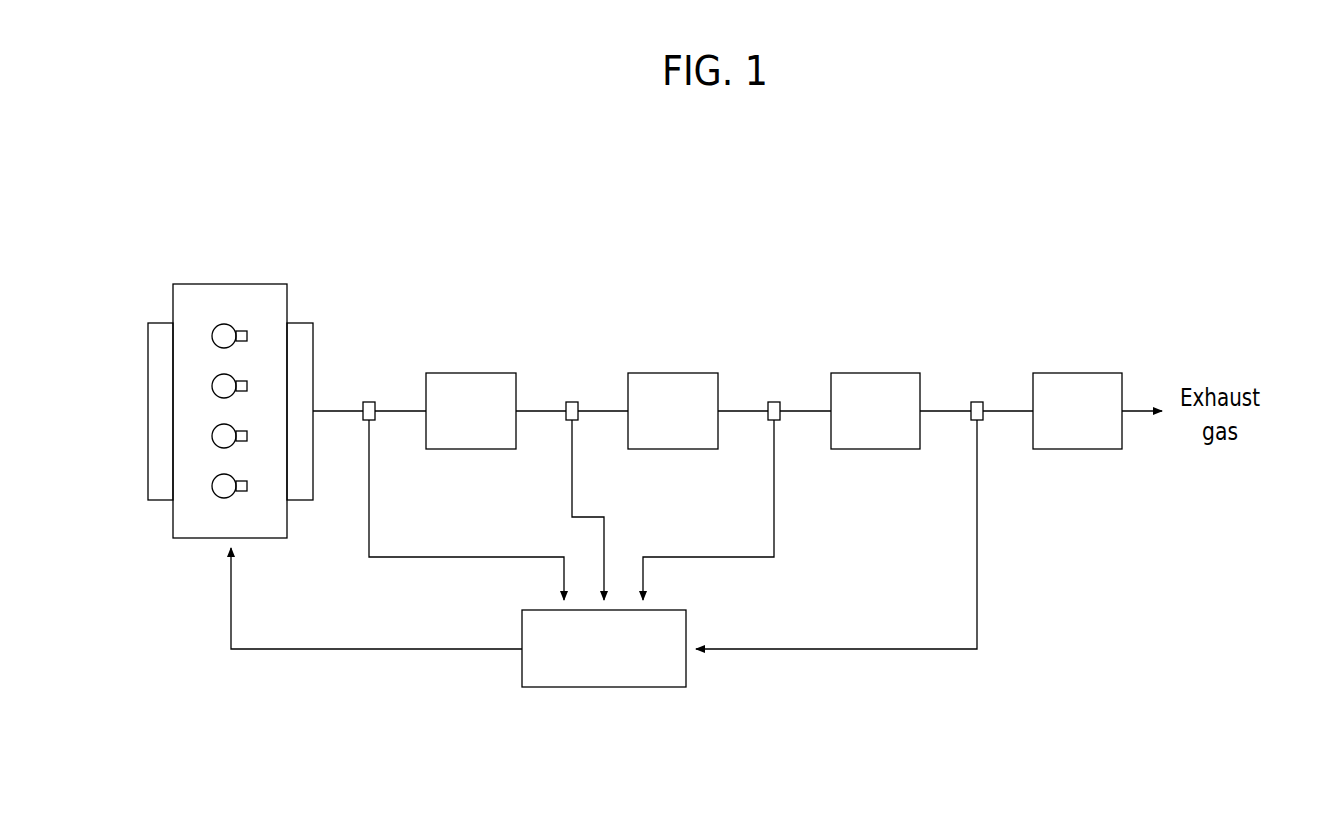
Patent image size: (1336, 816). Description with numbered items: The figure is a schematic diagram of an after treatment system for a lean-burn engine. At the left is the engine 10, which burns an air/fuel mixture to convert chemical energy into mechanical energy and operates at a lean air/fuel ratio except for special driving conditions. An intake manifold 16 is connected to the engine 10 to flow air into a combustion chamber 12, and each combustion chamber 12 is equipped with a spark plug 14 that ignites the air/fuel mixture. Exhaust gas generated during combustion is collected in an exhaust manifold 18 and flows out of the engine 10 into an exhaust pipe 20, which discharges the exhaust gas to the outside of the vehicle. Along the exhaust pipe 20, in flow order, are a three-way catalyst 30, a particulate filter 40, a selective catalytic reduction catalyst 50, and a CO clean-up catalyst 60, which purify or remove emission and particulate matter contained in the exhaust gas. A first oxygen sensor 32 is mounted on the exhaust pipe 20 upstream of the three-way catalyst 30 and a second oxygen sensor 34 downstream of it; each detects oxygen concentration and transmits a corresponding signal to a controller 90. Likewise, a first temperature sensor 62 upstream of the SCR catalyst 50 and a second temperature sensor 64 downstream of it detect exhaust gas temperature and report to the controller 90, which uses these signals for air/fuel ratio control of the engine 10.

The engine 10 is at (253, 268).
The combustion chamber 12 is at (224, 323).
The spark plug 14 is at (247, 337).
The intake manifold 16 is at (162, 323).
The exhaust manifold 18 is at (300, 323).
The exhaust pipe 20 is at (338, 413).
The three-way catalyst (TWC) 30 is at (470, 373).
The first oxygen sensor 32 is at (369, 402).
The second oxygen sensor 34 is at (571, 402).
The particulate filter (GPF) 40 is at (673, 373).
The selective catalytic reduction (SCR) catalyst 50 is at (876, 373).
The CO clean-up catalyst (CUC) 60 is at (1078, 373).
The first temperature sensor 62 is at (774, 402).
The second temperature sensor 64 is at (977, 402).
The controller 90 is at (604, 688).